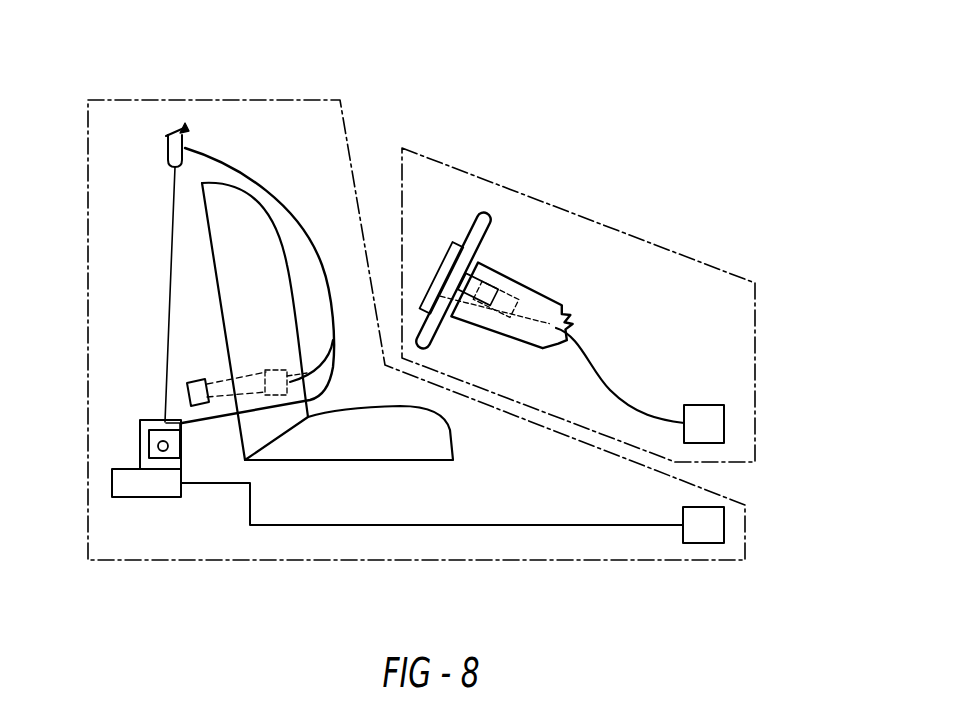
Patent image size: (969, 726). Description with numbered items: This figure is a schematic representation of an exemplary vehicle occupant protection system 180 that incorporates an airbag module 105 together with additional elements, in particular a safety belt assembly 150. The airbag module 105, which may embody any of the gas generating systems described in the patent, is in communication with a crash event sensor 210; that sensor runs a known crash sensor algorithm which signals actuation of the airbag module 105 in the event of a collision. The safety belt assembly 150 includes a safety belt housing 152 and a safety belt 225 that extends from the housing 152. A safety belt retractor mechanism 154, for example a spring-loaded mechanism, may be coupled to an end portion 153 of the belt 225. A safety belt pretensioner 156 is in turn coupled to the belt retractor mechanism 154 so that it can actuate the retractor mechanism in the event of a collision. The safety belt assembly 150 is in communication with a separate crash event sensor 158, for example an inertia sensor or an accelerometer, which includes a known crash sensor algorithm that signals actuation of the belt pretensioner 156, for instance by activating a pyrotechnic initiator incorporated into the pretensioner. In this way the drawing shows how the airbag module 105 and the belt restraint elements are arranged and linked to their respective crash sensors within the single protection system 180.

The safety belt assembly 150 is at (232, 90).
The safety belt 225 is at (267, 190).
The vehicle occupant protection system 180 is at (435, 97).
The airbag module 105 is at (460, 290).
The end portion 153 is at (152, 383).
The safety belt retractor mechanism 154 is at (140, 420).
The safety belt housing 152 is at (177, 450).
The safety belt pretensioner 156 is at (145, 485).
The crash event sensor 158 is at (707, 529).
The crash event sensor 210 is at (710, 415).